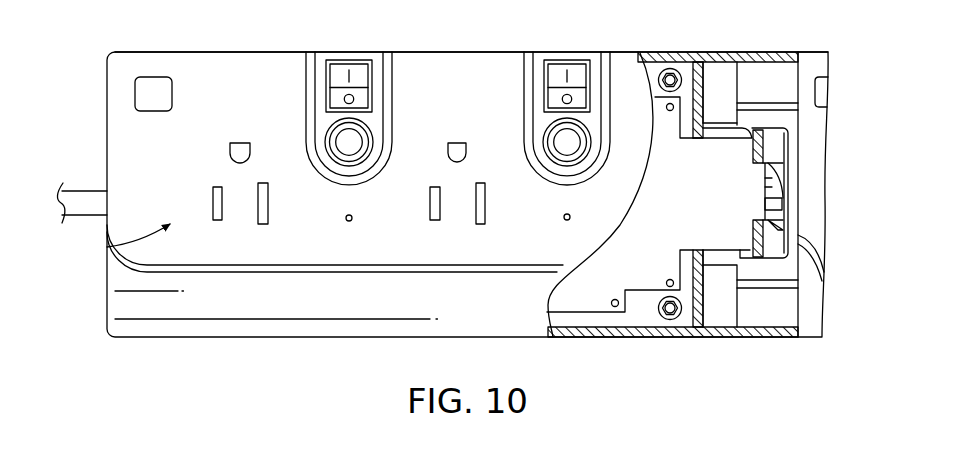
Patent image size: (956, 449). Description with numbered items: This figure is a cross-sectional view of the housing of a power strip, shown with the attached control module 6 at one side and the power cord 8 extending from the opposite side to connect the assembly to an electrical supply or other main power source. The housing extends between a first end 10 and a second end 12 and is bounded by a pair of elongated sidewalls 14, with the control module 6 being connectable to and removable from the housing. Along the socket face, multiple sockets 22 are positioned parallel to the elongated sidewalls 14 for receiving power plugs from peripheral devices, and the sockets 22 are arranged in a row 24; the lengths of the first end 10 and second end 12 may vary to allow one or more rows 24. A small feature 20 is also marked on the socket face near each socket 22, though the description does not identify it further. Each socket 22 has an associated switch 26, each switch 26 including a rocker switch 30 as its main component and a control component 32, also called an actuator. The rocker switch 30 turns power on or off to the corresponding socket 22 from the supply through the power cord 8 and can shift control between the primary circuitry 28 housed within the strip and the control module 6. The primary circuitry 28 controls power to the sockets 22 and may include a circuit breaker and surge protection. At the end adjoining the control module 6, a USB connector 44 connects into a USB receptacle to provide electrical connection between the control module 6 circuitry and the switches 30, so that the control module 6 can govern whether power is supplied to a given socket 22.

The control module 6 is at (812, 52).
The power cord 8 is at (80, 190).
The first end 10 is at (107, 300).
The second end 12 is at (693, 302).
The elongated sidewall 14 is at (211, 52).
The receptacle 20 is at (347, 221).
The socket 22 is at (240, 223).
The row of sockets 24 is at (107, 247).
The switch 26 is at (522, 72).
The primary circuitry 28 is at (705, 182).
The rocker switch 30 is at (340, 75).
The control component 32 is at (347, 140).
The USB connector 44 is at (771, 216).